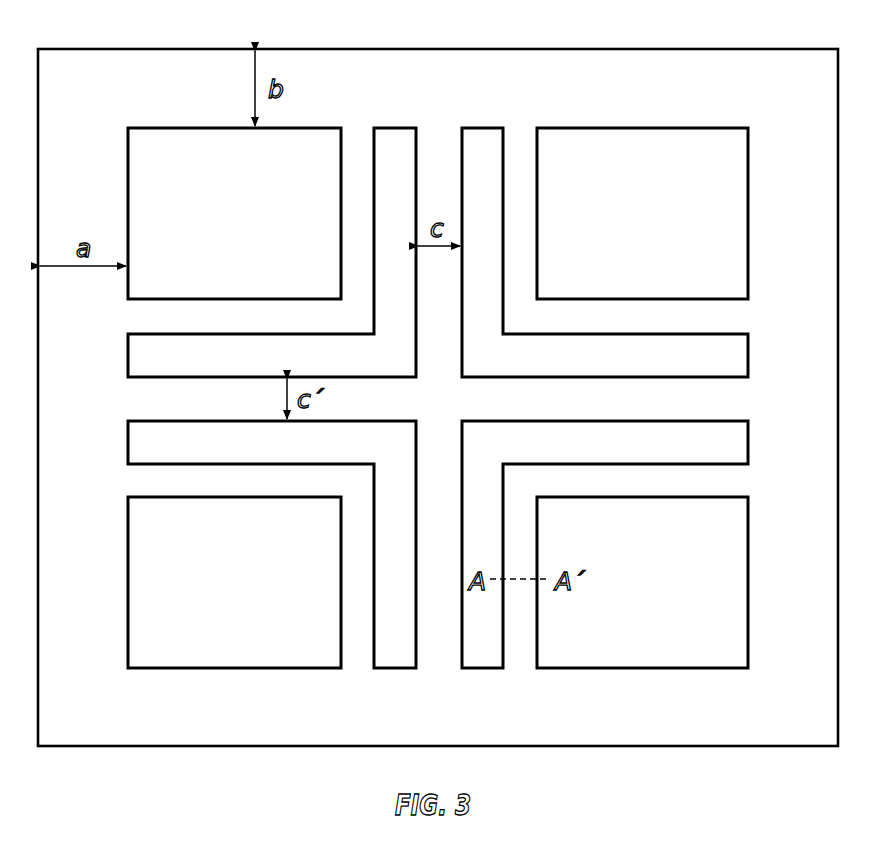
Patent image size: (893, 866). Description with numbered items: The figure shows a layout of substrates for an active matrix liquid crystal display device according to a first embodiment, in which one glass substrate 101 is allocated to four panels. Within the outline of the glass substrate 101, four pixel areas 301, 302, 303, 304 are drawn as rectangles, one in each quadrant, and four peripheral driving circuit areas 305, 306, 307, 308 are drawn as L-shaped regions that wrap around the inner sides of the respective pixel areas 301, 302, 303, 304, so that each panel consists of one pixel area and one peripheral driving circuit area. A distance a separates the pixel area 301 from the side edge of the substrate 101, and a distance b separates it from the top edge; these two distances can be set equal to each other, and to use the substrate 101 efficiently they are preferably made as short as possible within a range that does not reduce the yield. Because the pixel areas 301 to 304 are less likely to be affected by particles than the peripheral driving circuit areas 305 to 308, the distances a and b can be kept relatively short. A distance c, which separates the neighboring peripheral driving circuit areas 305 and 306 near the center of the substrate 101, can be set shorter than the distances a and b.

The glass substrate 101 is at (438, 375).
The pixel area 301 is at (234, 193).
The pixel area 302 is at (642, 193).
The pixel area 303 is at (234, 604).
The pixel area 304 is at (642, 604).
The peripheral driving circuit area 305 is at (272, 232).
The peripheral driving circuit area 306 is at (605, 232).
The peripheral driving circuit area 307 is at (272, 566).
The peripheral driving circuit area 308 is at (605, 566).